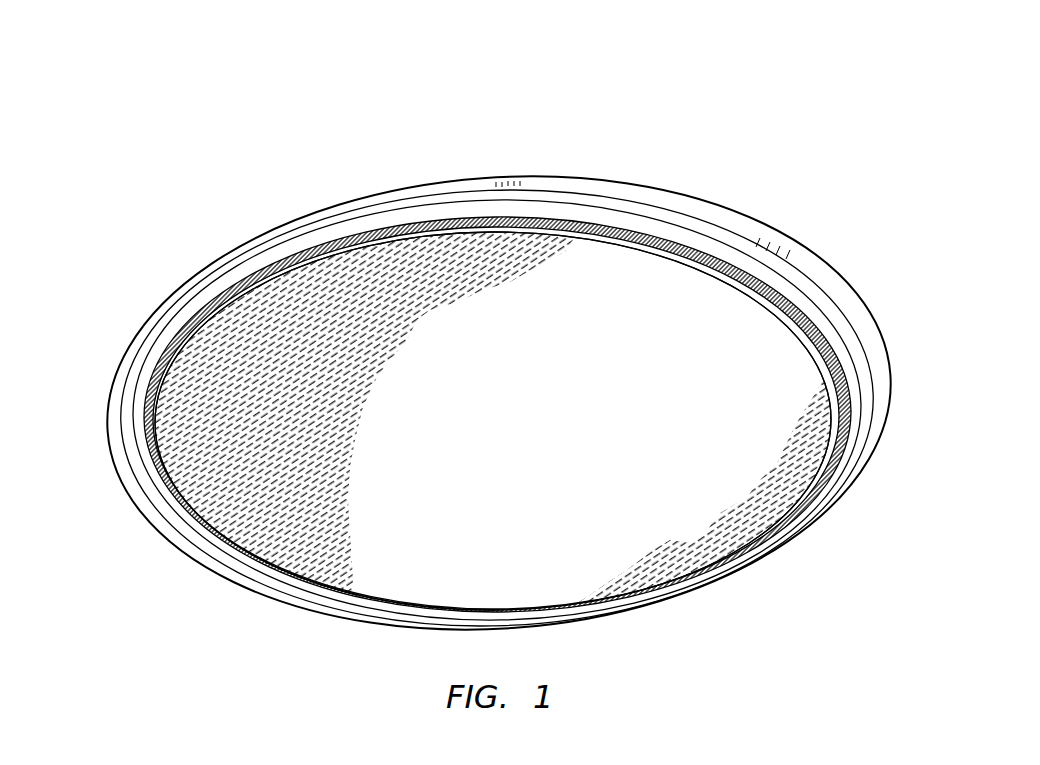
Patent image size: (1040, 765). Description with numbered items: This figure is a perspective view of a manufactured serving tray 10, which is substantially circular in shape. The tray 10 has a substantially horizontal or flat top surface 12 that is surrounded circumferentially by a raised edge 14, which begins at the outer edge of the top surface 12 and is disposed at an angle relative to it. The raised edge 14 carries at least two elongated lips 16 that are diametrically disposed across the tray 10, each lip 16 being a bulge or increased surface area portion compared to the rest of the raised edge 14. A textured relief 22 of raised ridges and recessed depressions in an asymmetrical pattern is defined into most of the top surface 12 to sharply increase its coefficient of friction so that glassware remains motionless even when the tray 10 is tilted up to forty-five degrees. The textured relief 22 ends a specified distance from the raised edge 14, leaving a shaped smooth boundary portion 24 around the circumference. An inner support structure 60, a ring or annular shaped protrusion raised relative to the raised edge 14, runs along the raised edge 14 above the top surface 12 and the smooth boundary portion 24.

The serving tray 10 is at (877, 233).
The top surface 12 is at (427, 383).
The raised edge 14 is at (618, 215).
The elongated lip 16 is at (750, 223).
The textured relief 22 is at (260, 335).
The smooth boundary portion 24 is at (520, 227).
The inner support structure 60 is at (663, 243).